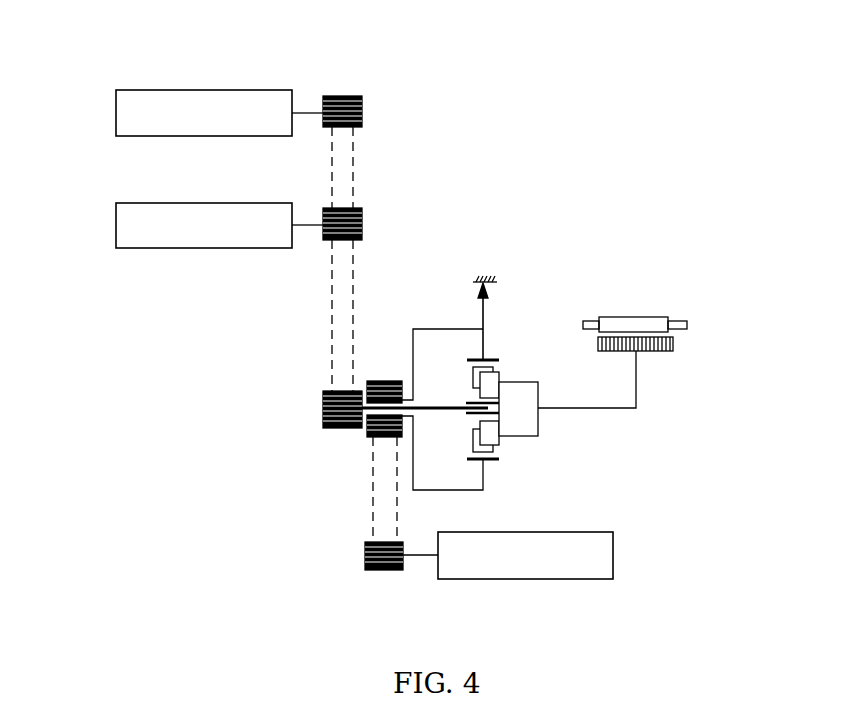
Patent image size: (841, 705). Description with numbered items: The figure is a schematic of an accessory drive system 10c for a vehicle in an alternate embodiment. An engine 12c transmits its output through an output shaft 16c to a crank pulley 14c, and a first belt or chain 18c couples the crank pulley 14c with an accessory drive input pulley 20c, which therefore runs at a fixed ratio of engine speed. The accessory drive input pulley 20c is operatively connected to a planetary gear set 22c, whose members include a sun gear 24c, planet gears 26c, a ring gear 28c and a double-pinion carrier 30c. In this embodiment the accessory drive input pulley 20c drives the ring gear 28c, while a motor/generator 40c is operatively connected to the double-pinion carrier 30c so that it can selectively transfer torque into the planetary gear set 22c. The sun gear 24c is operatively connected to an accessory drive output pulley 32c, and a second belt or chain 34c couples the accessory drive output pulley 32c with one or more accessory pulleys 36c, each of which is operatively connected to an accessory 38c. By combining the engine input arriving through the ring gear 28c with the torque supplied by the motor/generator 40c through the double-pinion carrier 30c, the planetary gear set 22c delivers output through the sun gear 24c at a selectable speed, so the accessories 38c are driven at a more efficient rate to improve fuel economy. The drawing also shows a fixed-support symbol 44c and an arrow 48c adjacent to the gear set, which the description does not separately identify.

The accessory drive system 10c is at (630, 120).
The engine 12c is at (580, 580).
The crank pulley 14c is at (378, 571).
The output shaft 16c is at (418, 557).
The first belt or chain 18c is at (371, 508).
The accessory drive input pulley 20c is at (388, 382).
The planetary gear set 22c is at (567, 455).
The sun gear 24c is at (464, 401).
The planet gears 26c is at (500, 375).
The ring gear 28c is at (488, 357).
The double-pinion carrier 30c is at (538, 422).
The accessory drive output pulley 32c is at (323, 398).
The second belt or chain 34c is at (356, 300).
The accessory pulleys 36c is at (350, 96).
The accessories 38c is at (128, 90).
The motor/generator 40c is at (657, 313).
The fixed ground 44c is at (492, 287).
The actuation force 48c is at (486, 266).